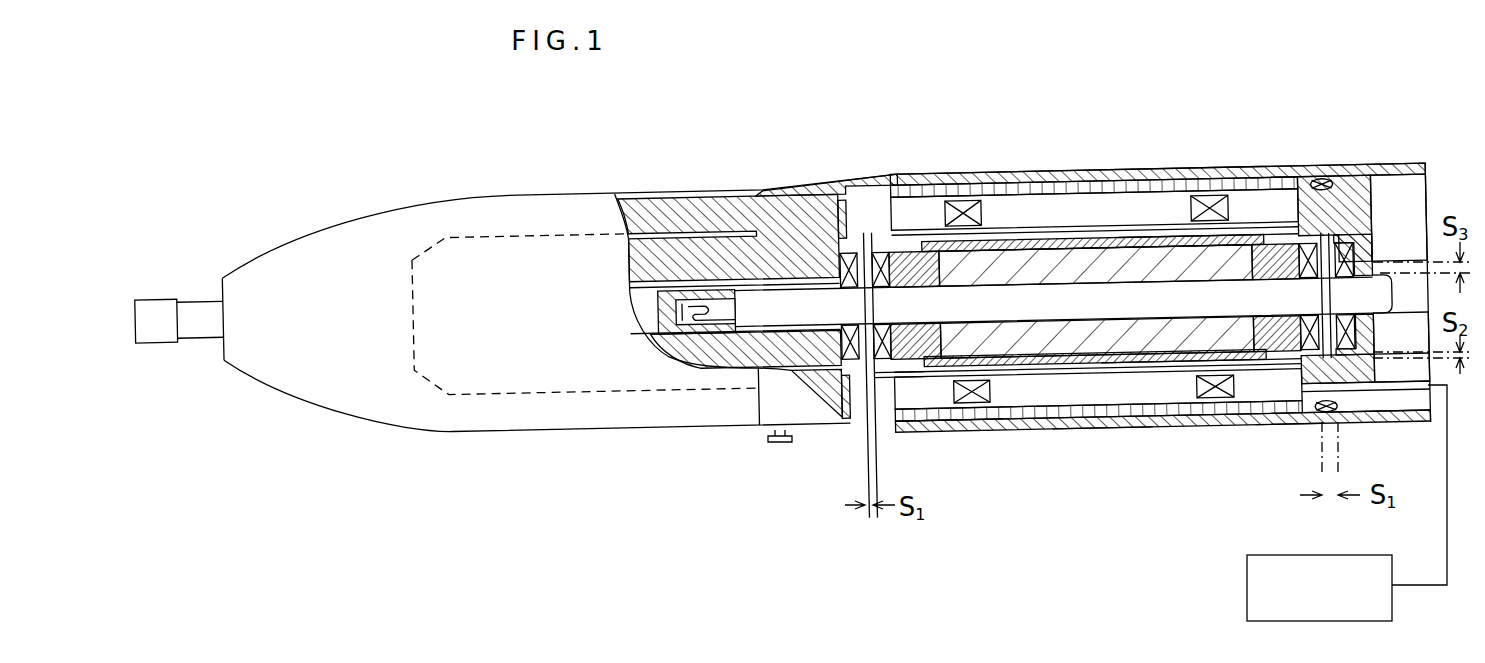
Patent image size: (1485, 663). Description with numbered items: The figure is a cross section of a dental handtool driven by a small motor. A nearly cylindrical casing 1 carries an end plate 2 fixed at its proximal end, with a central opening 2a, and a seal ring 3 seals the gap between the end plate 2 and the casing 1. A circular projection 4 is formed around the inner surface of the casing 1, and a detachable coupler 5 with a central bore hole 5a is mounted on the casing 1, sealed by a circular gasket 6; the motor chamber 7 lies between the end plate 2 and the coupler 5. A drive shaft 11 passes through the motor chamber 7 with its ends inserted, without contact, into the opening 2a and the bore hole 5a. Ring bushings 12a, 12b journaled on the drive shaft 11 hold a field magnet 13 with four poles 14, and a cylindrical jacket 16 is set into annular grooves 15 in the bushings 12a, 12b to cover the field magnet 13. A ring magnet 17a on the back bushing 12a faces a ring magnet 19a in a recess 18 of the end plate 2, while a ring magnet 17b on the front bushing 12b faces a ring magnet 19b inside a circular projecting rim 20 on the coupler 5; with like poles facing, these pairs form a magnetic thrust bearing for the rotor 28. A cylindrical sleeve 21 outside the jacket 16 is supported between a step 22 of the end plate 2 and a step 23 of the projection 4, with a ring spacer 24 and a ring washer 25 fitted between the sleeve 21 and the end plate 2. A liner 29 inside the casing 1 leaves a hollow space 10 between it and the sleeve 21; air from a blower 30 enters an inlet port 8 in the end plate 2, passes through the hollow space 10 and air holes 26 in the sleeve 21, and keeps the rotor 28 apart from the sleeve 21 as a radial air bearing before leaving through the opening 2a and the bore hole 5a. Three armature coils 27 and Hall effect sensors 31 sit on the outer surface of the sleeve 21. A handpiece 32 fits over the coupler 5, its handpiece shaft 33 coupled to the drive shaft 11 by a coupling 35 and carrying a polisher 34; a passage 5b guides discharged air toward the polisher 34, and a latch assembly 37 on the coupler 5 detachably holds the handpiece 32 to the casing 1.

The casing 1 is at (1073, 182).
The end plate 2 is at (1358, 185).
The opening 2a is at (1376, 322).
The seal ring 3 is at (847, 172).
The circular projection 4 is at (870, 200).
The coupler 5 is at (410, 302).
The bore hole 5a is at (818, 284).
The passage 5b is at (762, 282).
The circular gasket 6 is at (824, 197).
The motor chamber 7 is at (915, 198).
The inlet port 8 is at (1286, 432).
The hollow space 10 is at (940, 432).
The drive shaft 11 is at (1392, 297).
The ring bushing 12a is at (1265, 318).
The ring bushing 12b is at (928, 286).
The field magnet 13 is at (1065, 326).
The poles 14 is at (1137, 282).
The annular grooves 15 is at (944, 356).
The cylindrical jacket 16 is at (1120, 370).
The ring magnet 17a is at (1310, 320).
The ring magnet 17b is at (878, 288).
The recess 18 is at (1375, 252).
The ring magnet 19a is at (1345, 320).
The ring magnet 19b is at (851, 288).
The circular projecting rim 20 is at (800, 395).
The cylindrical sleeve 21 is at (1101, 432).
The step 22 is at (1398, 217).
The step 23 is at (926, 376).
The ring spacer 24 is at (1374, 365).
The ring washer 25 is at (1300, 372).
The air holes 26 is at (986, 218).
The armature coils 27 is at (958, 205).
The rotor 28 is at (1122, 230).
The liner 29 is at (1268, 180).
The blower 30 is at (1247, 588).
The Hall effect sensors 31 is at (1090, 222).
The handpiece 32 is at (562, 430).
The handpiece shaft 33 is at (648, 306).
The polisher 34 is at (163, 300).
The coupling 35 is at (708, 336).
The latch assembly 37 is at (775, 444).